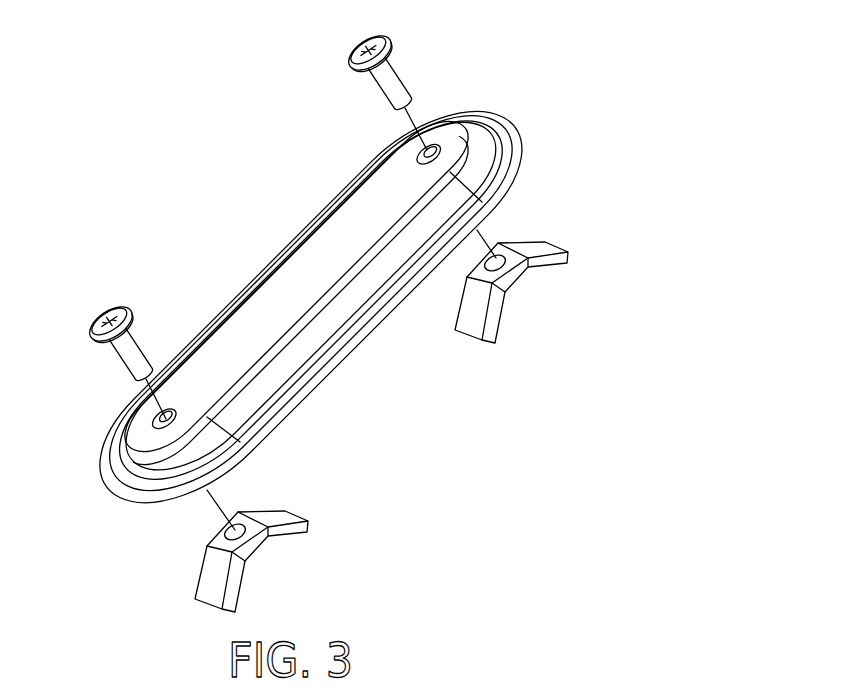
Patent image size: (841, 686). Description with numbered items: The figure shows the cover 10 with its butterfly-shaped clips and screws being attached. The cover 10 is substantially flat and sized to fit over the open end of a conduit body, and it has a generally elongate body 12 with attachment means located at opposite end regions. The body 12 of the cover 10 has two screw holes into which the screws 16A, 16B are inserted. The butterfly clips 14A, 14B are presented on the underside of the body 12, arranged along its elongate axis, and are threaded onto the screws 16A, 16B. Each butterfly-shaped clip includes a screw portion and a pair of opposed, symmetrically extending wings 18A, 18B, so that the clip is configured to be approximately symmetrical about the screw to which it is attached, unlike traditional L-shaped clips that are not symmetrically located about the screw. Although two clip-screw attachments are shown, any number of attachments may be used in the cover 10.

The cover 10 is at (218, 235).
The elongate body 12 is at (317, 267).
The butterfly shaped clip 14A is at (535, 304).
The butterfly shaped clip 14B is at (275, 569).
The screw 16A is at (386, 52).
The screw 16B is at (121, 315).
The wings 18A is at (562, 262).
The wings 18B is at (308, 528).